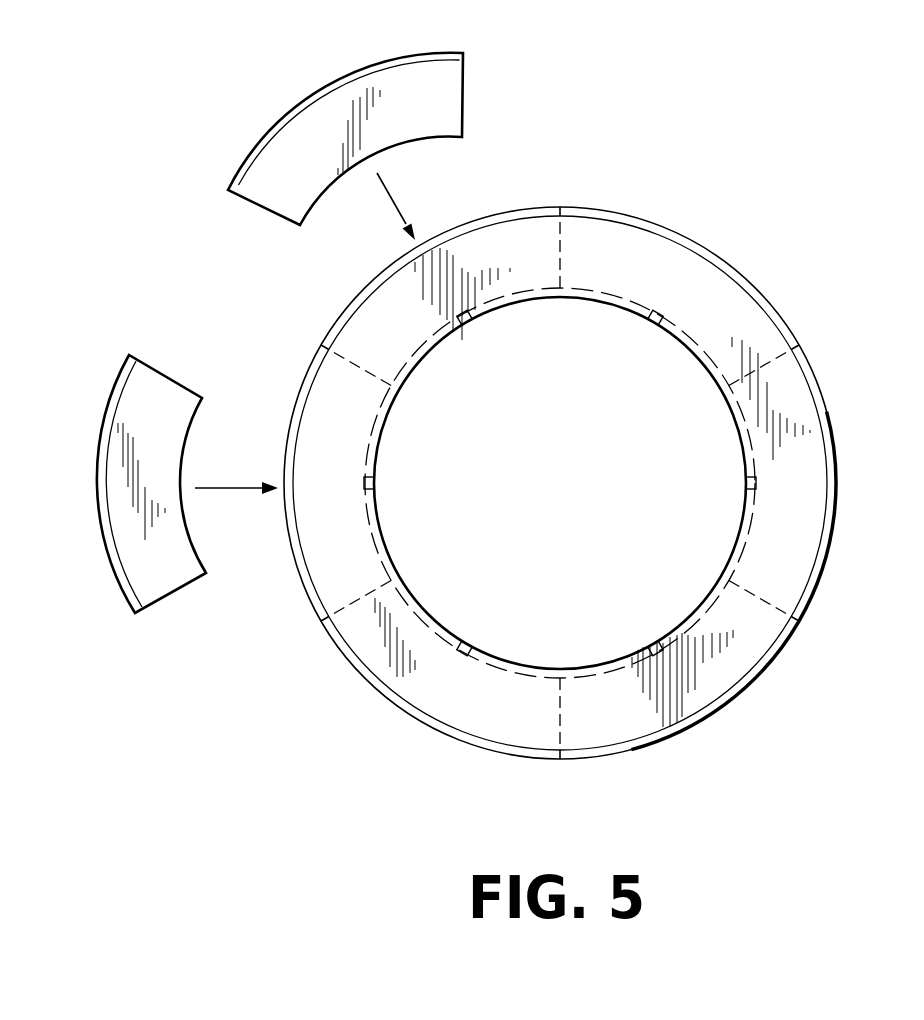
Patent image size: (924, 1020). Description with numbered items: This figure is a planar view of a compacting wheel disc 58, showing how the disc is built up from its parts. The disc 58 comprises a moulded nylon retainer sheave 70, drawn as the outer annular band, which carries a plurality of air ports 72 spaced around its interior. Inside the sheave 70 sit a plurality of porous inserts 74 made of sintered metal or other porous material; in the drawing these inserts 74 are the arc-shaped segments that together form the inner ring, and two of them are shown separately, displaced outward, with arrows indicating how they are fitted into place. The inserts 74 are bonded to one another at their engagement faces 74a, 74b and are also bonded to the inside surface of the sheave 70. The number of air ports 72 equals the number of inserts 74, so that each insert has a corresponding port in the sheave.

The disc 58 is at (793, 274).
The retainer sheave 70 is at (420, 672).
The air ports 72 is at (377, 478).
The porous inserts 74 is at (802, 478).
The engagement face 74a is at (185, 388).
The engagement face 74b is at (467, 107).